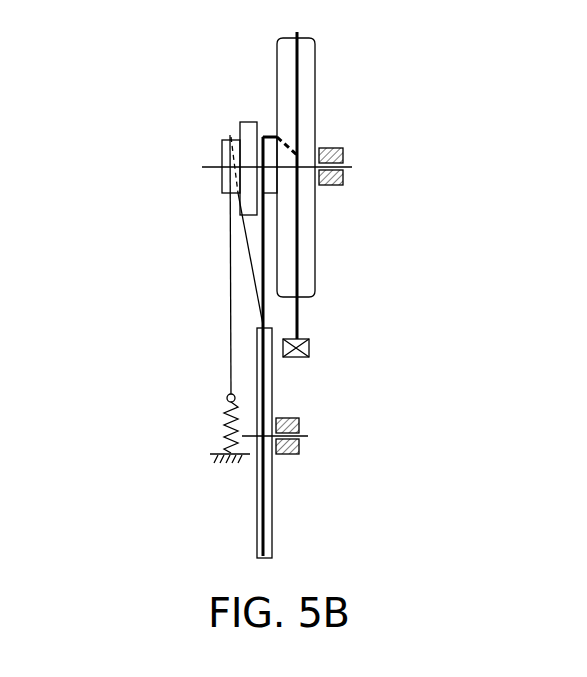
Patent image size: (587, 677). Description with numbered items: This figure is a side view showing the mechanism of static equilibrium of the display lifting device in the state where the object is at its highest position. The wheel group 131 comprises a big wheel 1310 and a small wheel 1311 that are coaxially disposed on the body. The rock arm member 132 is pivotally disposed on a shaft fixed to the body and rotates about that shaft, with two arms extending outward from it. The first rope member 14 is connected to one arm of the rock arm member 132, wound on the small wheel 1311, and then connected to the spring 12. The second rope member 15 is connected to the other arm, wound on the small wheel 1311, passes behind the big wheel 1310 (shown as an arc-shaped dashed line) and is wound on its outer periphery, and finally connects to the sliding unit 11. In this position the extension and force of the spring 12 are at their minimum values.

The wheel group 131 is at (102, 67).
The big wheel 1310 is at (287, 88).
The small wheel 1311 is at (222, 153).
The first rope member 14 is at (230, 330).
The spring 12 is at (220, 417).
The second rope member 15 is at (299, 322).
The sliding unit 11 is at (310, 349).
The rock arm member 132 is at (265, 520).